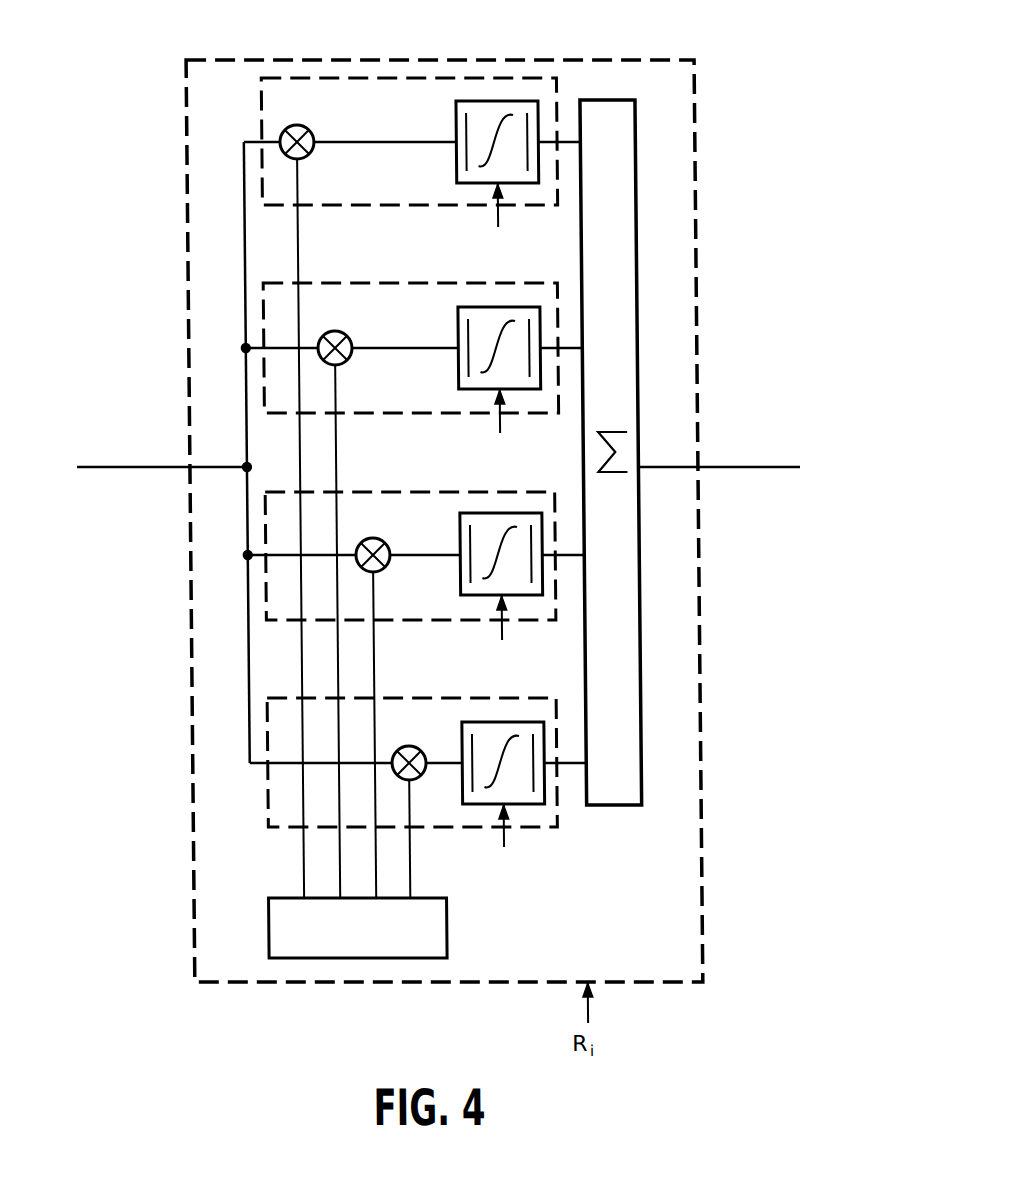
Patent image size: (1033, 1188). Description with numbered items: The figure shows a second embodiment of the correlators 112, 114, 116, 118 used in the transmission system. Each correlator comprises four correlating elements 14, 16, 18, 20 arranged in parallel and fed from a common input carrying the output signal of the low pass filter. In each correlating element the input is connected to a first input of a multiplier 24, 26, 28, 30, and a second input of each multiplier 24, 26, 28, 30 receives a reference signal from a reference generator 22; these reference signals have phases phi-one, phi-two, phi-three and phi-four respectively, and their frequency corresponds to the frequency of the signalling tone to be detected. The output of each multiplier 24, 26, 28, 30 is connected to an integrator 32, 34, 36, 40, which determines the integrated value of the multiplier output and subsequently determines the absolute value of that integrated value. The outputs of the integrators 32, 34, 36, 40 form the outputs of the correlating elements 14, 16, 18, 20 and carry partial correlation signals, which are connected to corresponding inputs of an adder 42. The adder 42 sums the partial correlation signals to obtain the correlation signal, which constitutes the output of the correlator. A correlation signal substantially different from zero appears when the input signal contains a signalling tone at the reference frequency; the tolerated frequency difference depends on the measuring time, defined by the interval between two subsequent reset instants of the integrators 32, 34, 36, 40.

The correlator 112 is at (447, 491).
The correlator 114 is at (447, 491).
The correlator 116 is at (447, 491).
The correlator 118 is at (608, 58).
The correlating element 14 is at (388, 205).
The correlating element 16 is at (391, 413).
The correlating element 18 is at (389, 620).
The correlating element 20 is at (425, 827).
The reference generator 22 is at (438, 947).
The multiplier 24 is at (291, 126).
The multiplier 26 is at (324, 333).
The multiplier 28 is at (360, 541).
The multiplier 30 is at (395, 748).
The integrator 32 is at (455, 108).
The integrator 34 is at (455, 314).
The integrator 36 is at (454, 530).
The integrator 40 is at (455, 740).
The adder 42 is at (600, 805).